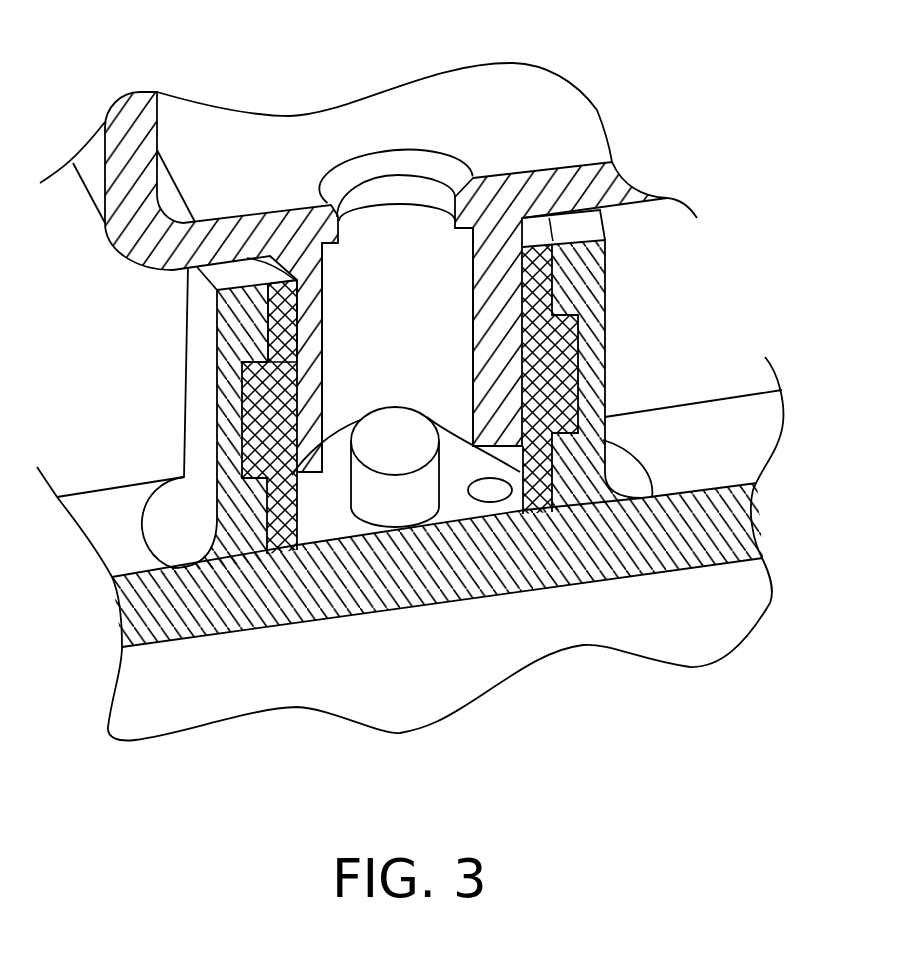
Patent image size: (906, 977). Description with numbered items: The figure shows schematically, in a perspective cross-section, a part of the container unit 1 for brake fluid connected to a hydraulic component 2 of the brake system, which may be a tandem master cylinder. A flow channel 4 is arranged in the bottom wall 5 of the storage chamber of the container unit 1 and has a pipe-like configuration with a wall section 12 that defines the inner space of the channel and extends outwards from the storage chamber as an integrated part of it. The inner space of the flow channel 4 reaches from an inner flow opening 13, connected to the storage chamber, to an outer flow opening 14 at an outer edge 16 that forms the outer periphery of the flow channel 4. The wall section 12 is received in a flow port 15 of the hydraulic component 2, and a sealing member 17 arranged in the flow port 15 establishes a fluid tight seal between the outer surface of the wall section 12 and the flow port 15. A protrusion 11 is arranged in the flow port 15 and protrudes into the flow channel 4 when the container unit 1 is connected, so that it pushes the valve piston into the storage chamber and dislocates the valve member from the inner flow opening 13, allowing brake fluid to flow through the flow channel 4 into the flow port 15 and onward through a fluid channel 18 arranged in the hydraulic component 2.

The container unit 1 is at (490, 130).
The hydraulic component 2 is at (592, 360).
The flow channel 4 is at (395, 330).
The bottom wall 5 is at (557, 197).
The protrusion 11 is at (390, 498).
The wall section 12 is at (270, 380).
The inner flow opening 13 is at (370, 167).
The outer flow opening 14 is at (340, 446).
The flow port 15 is at (328, 488).
The outer edge 16 is at (606, 472).
The sealing member 17 is at (550, 333).
The fluid channel 18 is at (492, 490).